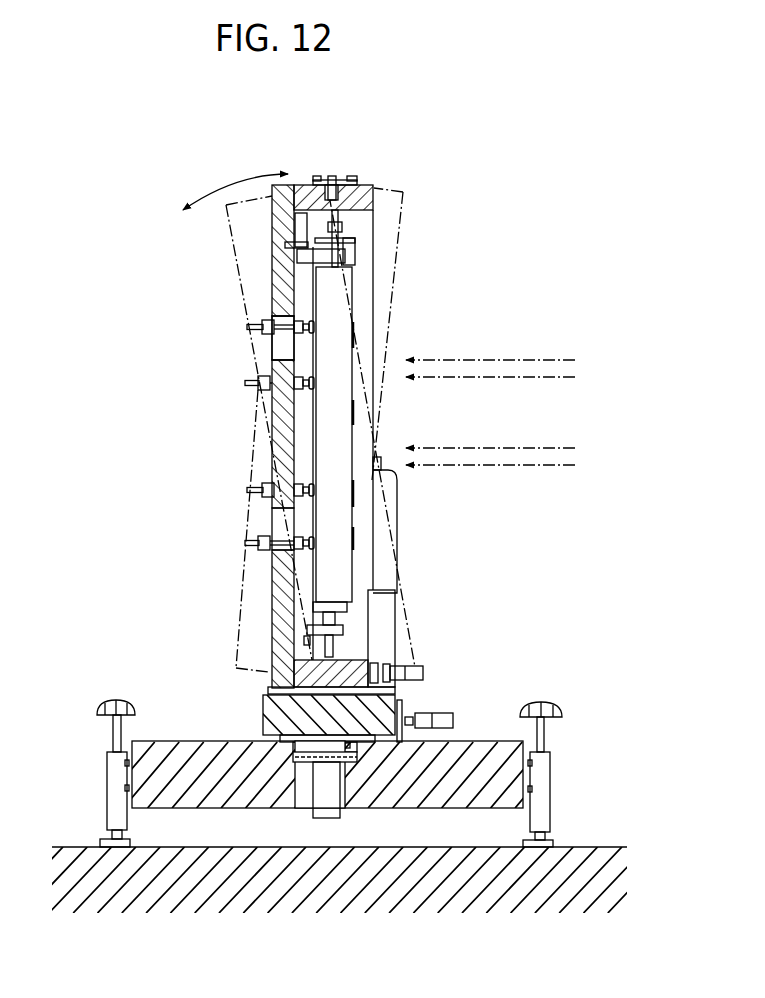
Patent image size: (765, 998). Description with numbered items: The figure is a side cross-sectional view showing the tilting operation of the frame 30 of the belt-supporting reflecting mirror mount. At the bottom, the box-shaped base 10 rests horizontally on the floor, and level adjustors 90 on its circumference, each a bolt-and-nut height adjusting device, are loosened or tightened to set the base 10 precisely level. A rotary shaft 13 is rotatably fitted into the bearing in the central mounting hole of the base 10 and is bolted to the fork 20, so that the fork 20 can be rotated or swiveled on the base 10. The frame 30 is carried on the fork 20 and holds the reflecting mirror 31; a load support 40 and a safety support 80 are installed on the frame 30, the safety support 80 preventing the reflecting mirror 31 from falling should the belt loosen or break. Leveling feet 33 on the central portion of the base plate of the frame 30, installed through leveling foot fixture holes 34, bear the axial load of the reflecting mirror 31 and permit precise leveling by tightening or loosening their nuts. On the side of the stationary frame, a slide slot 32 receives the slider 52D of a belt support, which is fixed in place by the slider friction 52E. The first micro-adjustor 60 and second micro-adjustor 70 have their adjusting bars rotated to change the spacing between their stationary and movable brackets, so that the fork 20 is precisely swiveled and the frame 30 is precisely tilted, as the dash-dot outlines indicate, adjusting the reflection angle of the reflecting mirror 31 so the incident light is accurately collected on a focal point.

The base 10 is at (130, 741).
The rotary shaft 13 is at (341, 814).
The fork 20 is at (262, 706).
The frame 30 is at (270, 289).
The reflecting mirror 31 is at (353, 407).
The slide slot 32 is at (351, 181).
The leveling foot 33 is at (285, 329).
The leveling foot fixture hole 34 is at (278, 351).
The load support 40 is at (298, 251).
The slider 52D is at (324, 181).
The slider friction 52E is at (337, 181).
The first micro-adjustor 60 is at (450, 709).
The second micro-adjustor 70 is at (421, 658).
The safety support 80 is at (288, 628).
The level adjustor 90 is at (102, 782).